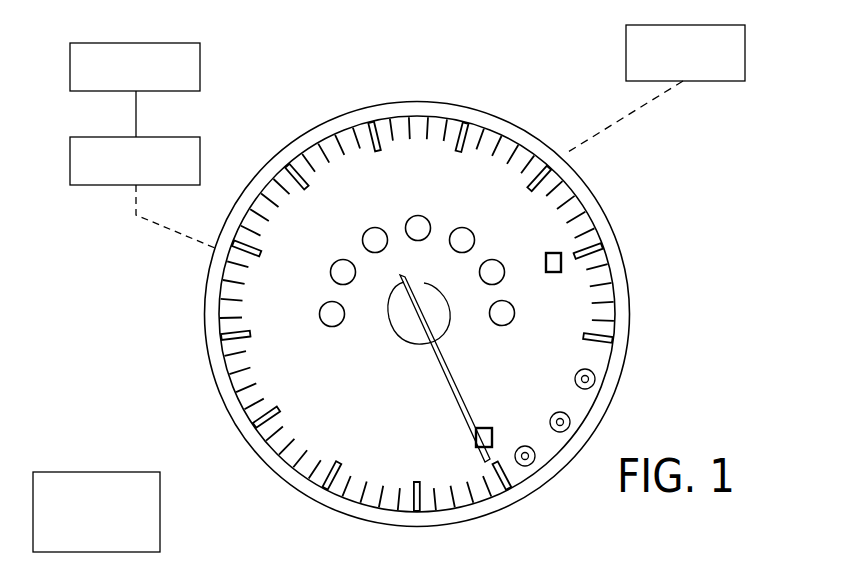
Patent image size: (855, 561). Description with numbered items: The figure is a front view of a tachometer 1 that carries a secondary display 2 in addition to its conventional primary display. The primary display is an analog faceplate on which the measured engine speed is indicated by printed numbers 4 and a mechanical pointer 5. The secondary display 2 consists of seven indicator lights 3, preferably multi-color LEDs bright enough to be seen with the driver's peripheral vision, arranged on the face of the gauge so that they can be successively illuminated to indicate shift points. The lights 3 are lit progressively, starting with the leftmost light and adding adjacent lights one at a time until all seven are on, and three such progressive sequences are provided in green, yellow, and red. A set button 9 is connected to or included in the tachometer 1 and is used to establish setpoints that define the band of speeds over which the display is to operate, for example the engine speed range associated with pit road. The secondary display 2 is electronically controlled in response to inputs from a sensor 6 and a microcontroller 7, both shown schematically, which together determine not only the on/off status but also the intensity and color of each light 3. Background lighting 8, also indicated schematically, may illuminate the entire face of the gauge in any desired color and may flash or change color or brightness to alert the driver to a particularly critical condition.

The tachometer 1 is at (600, 168).
The secondary display 2 is at (368, 208).
The indicator lights 3 is at (363, 240).
The printed numbers 4 is at (393, 182).
The mechanical pointer 5 is at (456, 372).
The sensor 6 is at (200, 62).
The microcontroller 7 is at (85, 185).
The background lighting 8 is at (101, 472).
The set button 9 is at (745, 40).